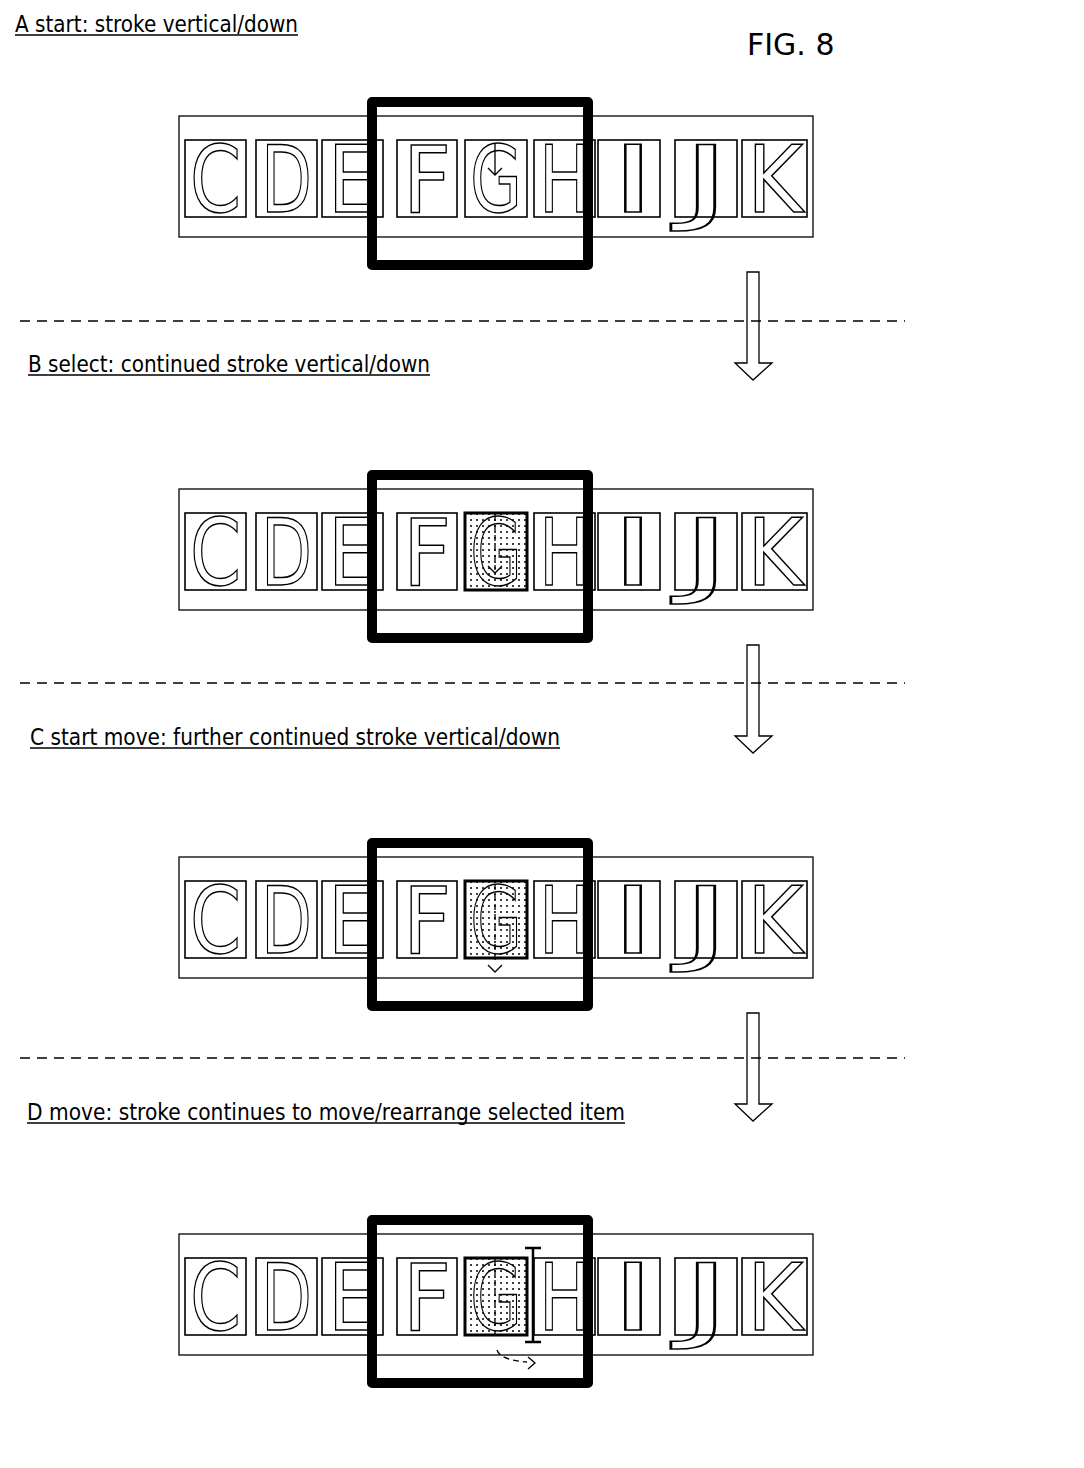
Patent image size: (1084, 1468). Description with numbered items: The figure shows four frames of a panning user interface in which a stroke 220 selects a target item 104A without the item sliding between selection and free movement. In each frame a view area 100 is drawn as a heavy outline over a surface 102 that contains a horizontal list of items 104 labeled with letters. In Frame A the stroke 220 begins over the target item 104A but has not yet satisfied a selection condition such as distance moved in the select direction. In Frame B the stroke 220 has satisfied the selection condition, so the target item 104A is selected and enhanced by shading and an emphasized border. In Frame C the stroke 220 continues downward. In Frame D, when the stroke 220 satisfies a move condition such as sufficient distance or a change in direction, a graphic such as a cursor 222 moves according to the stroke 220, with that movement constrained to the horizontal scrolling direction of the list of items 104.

The view area 100 is at (573, 97).
The surface 102 is at (470, 705).
The items 104 is at (496, 704).
The target item 104A is at (513, 140).
The stroke 220 is at (494, 157).
The cursor 222 is at (537, 1247).